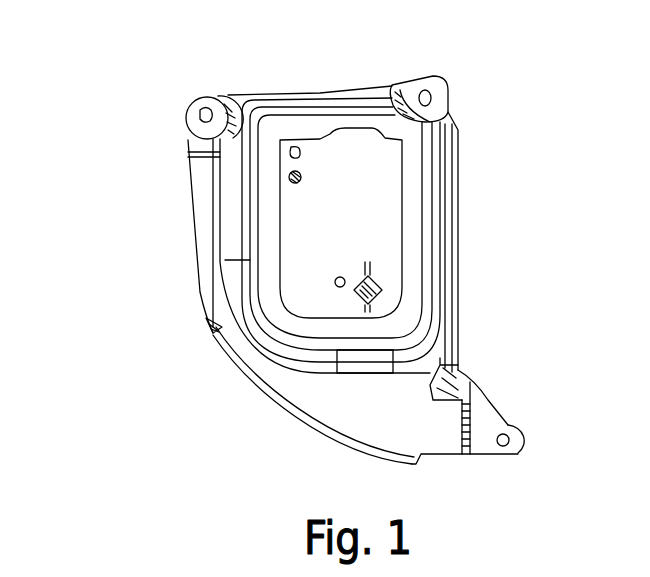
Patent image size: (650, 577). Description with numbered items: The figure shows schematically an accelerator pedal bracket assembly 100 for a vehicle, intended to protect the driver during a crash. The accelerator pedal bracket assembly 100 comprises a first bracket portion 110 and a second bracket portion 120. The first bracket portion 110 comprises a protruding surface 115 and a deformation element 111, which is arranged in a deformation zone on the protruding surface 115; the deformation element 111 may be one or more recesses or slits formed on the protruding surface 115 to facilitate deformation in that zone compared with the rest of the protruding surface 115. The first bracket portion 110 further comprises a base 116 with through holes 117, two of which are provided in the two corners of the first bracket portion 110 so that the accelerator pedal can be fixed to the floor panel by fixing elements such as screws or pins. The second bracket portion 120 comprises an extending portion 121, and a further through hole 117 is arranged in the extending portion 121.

The accelerator pedal bracket assembly 100 is at (116, 101).
The first bracket portion 110 is at (194, 222).
The deformation element 111 is at (380, 274).
The protruding surface 115 is at (380, 188).
The base 116 is at (202, 175).
The through hole 117 is at (205, 102).
The second bracket portion 120 is at (262, 405).
The extending portion 121 is at (490, 402).